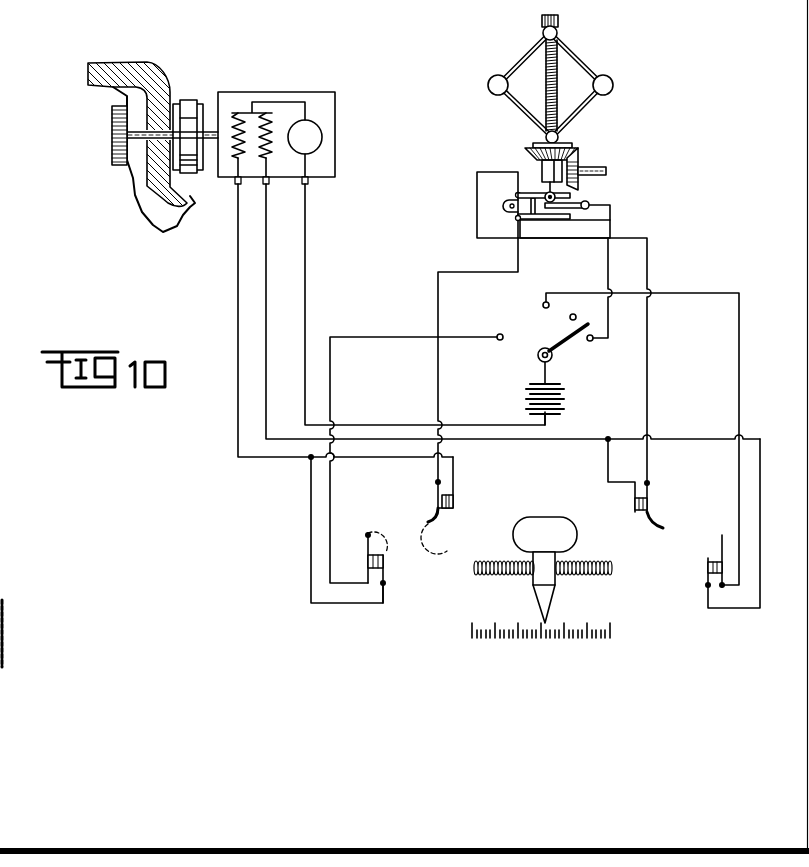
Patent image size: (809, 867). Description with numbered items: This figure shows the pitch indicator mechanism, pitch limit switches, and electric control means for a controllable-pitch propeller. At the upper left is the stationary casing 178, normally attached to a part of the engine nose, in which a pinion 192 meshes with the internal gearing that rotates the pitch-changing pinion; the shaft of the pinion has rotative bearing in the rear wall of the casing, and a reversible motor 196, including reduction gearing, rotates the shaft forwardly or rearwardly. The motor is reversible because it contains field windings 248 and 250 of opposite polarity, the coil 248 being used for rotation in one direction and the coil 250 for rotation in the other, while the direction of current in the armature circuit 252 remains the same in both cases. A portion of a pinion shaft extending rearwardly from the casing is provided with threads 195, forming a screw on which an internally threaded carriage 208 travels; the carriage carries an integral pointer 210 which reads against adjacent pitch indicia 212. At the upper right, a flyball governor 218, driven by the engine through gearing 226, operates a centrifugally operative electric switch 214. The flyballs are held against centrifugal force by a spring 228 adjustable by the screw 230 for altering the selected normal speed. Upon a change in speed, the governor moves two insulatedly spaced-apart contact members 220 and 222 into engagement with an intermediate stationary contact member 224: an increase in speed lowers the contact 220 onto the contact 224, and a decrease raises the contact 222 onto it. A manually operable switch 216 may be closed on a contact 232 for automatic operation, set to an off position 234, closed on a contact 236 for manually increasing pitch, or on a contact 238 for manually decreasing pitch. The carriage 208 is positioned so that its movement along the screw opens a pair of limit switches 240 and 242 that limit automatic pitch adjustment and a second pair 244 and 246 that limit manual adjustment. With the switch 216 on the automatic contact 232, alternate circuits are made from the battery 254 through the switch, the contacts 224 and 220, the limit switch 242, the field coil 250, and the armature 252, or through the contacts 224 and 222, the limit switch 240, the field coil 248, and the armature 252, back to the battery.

The stationary casing 178 is at (160, 68).
The pinion 192 is at (112, 137).
The reversible motor 196 is at (292, 141).
The field winding 248 is at (243, 157).
The field winding 250 is at (266, 156).
The armature circuit 252 is at (322, 130).
The screw 230 is at (560, 22).
The flyball governor 218 is at (573, 84).
The spring 228 is at (556, 90).
The gearing 226 is at (574, 150).
The centrifugally operative electric switch 214 is at (648, 168).
The contact member 220 is at (572, 197).
The contact member 222 is at (543, 205).
The stationary contact member 224 is at (588, 210).
The manually operable switch 216 is at (539, 332).
The contact 236 is at (544, 303).
The off position 234 is at (583, 307).
The contact 232 is at (589, 342).
The contact 238 is at (501, 334).
The battery 254 is at (562, 399).
The limit switch 240 is at (455, 483).
The limit switch 244 is at (370, 590).
The limit switch 242 is at (656, 535).
The limit switch 246 is at (707, 556).
The carriage 208 is at (552, 520).
The pointer 210 is at (548, 612).
The threads 195 is at (514, 580).
The pitch indicia 212 is at (615, 633).